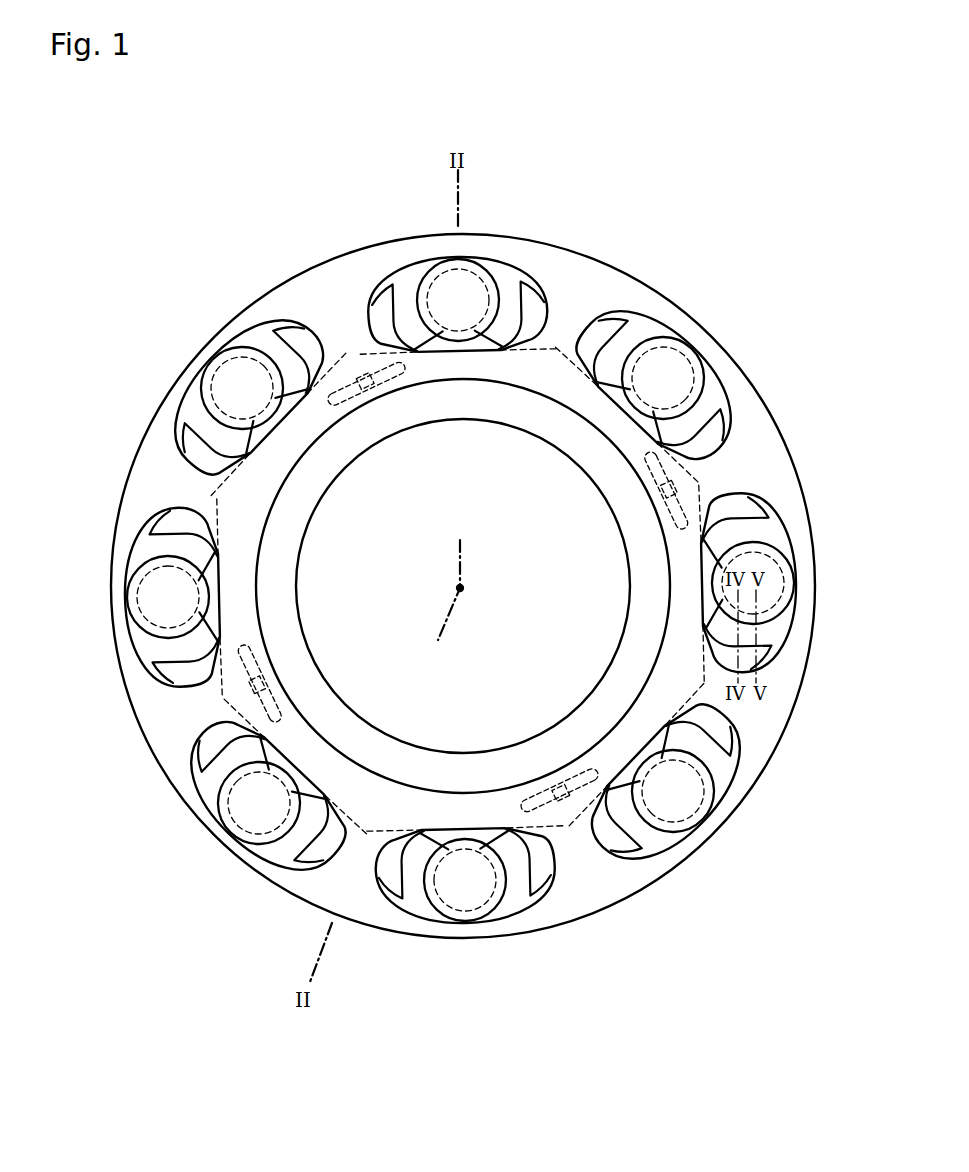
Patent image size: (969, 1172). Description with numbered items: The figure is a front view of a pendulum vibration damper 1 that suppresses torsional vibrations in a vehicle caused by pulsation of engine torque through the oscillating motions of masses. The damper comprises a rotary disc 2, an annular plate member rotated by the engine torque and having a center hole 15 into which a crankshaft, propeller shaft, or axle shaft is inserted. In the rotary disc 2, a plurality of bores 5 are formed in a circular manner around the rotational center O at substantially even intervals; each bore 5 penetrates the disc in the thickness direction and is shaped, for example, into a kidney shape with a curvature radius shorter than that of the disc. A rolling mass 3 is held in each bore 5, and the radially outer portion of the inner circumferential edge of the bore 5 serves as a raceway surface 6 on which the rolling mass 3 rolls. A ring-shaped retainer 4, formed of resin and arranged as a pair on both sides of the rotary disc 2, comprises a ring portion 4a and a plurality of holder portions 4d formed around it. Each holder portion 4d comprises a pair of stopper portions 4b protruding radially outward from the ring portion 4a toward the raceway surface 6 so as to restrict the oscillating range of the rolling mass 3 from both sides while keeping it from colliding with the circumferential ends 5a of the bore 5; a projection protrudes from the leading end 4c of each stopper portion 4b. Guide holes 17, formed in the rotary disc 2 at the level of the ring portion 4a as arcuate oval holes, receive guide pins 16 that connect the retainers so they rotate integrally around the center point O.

The pendulum vibration damper 1 is at (587, 186).
The rotary disc 2 is at (785, 416).
The rolling mass 3 is at (234, 385).
The retainer 4 is at (638, 633).
The ring portion 4a is at (480, 366).
The stopper portion 4b is at (195, 440).
The leading end 4c is at (778, 674).
The holder portion 4d is at (262, 345).
The bore 5 is at (269, 338).
The circumferential end 5a is at (190, 691).
The raceway surface 6 is at (187, 399).
The center hole 15 is at (538, 428).
The guide pin 16 is at (548, 792).
The guide hole 17 is at (563, 775).
The rotational center O is at (479, 598).